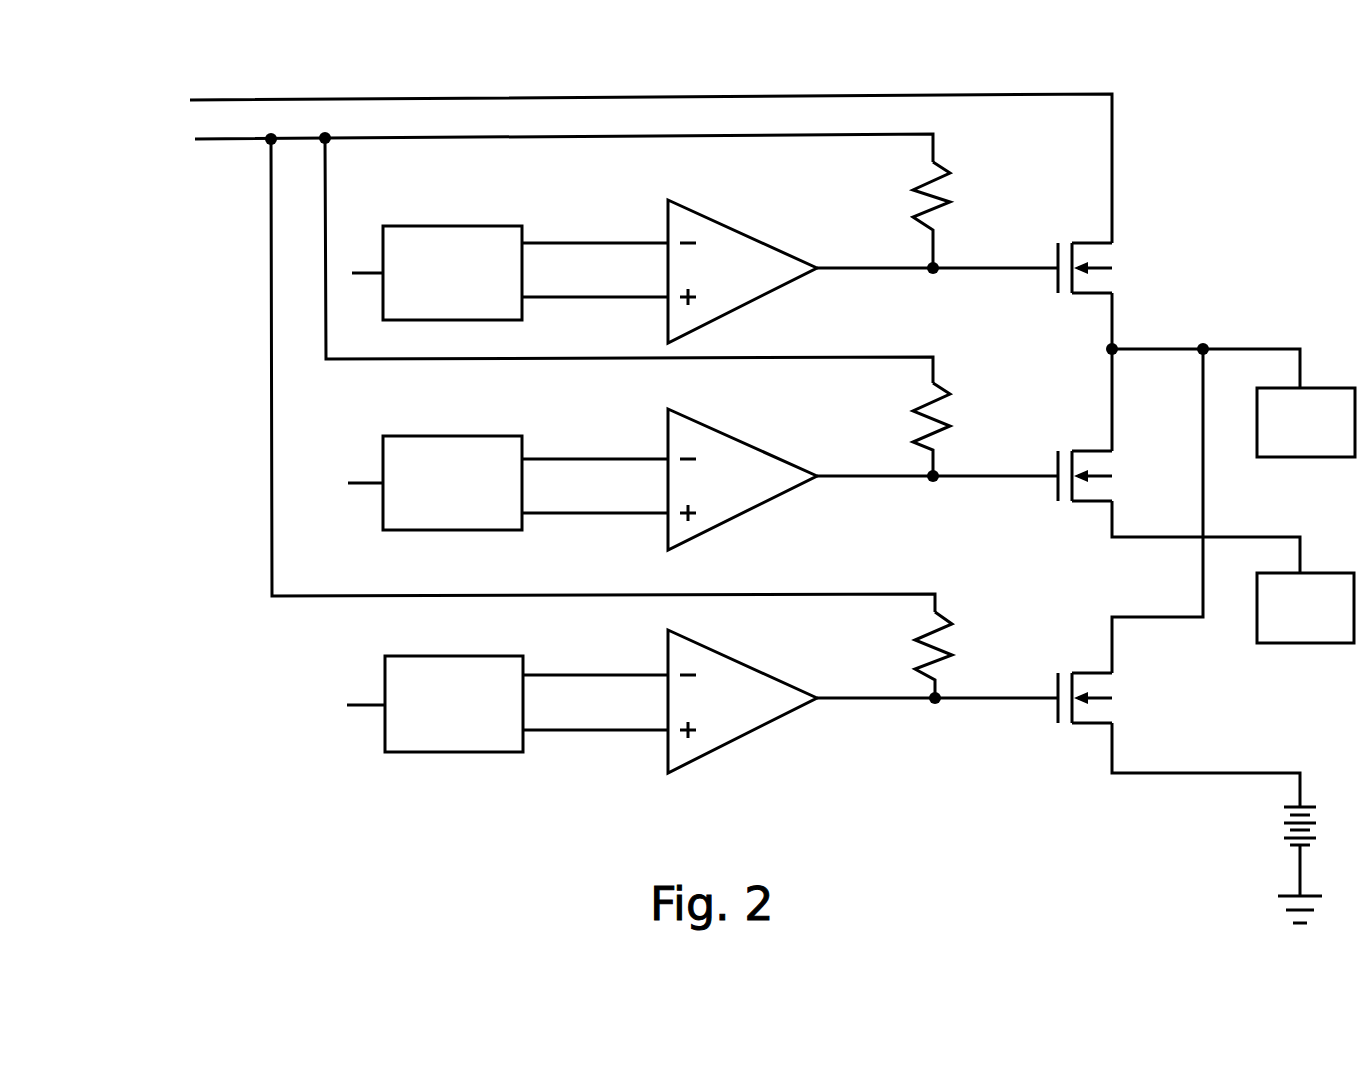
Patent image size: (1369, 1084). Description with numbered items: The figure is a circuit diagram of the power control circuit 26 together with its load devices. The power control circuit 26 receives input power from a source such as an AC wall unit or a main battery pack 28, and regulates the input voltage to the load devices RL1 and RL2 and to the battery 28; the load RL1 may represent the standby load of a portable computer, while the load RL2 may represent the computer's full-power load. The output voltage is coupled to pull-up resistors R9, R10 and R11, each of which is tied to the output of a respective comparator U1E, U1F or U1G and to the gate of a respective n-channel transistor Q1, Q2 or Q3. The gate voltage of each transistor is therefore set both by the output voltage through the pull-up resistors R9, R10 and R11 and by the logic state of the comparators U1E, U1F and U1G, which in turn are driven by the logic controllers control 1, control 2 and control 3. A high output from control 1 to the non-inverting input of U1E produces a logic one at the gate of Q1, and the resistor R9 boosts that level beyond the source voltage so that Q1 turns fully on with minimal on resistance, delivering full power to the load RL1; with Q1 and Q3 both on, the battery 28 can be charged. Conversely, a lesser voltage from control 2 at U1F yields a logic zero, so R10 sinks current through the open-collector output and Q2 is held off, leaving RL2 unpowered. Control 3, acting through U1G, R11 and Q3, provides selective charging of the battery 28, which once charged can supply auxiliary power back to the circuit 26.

The power control circuit 26 is at (222, 395).
The battery 28 is at (1275, 822).
The control 1 is at (437, 273).
The control 2 is at (435, 483).
The control 3 is at (435, 704).
The pull-up resistor R9 is at (956, 215).
The pull-up resistor R10 is at (963, 429).
The pull-up resistor R11 is at (966, 655).
The n-channel transistor Q1 is at (1110, 268).
The n-channel transistor Q2 is at (1113, 476).
The n-channel transistor Q3 is at (1113, 698).
The comparator U1E is at (742, 271).
The comparator U1F is at (742, 479).
The comparator U1G is at (748, 701).
The load device RL1 is at (1306, 422).
The load device RL2 is at (1305, 608).